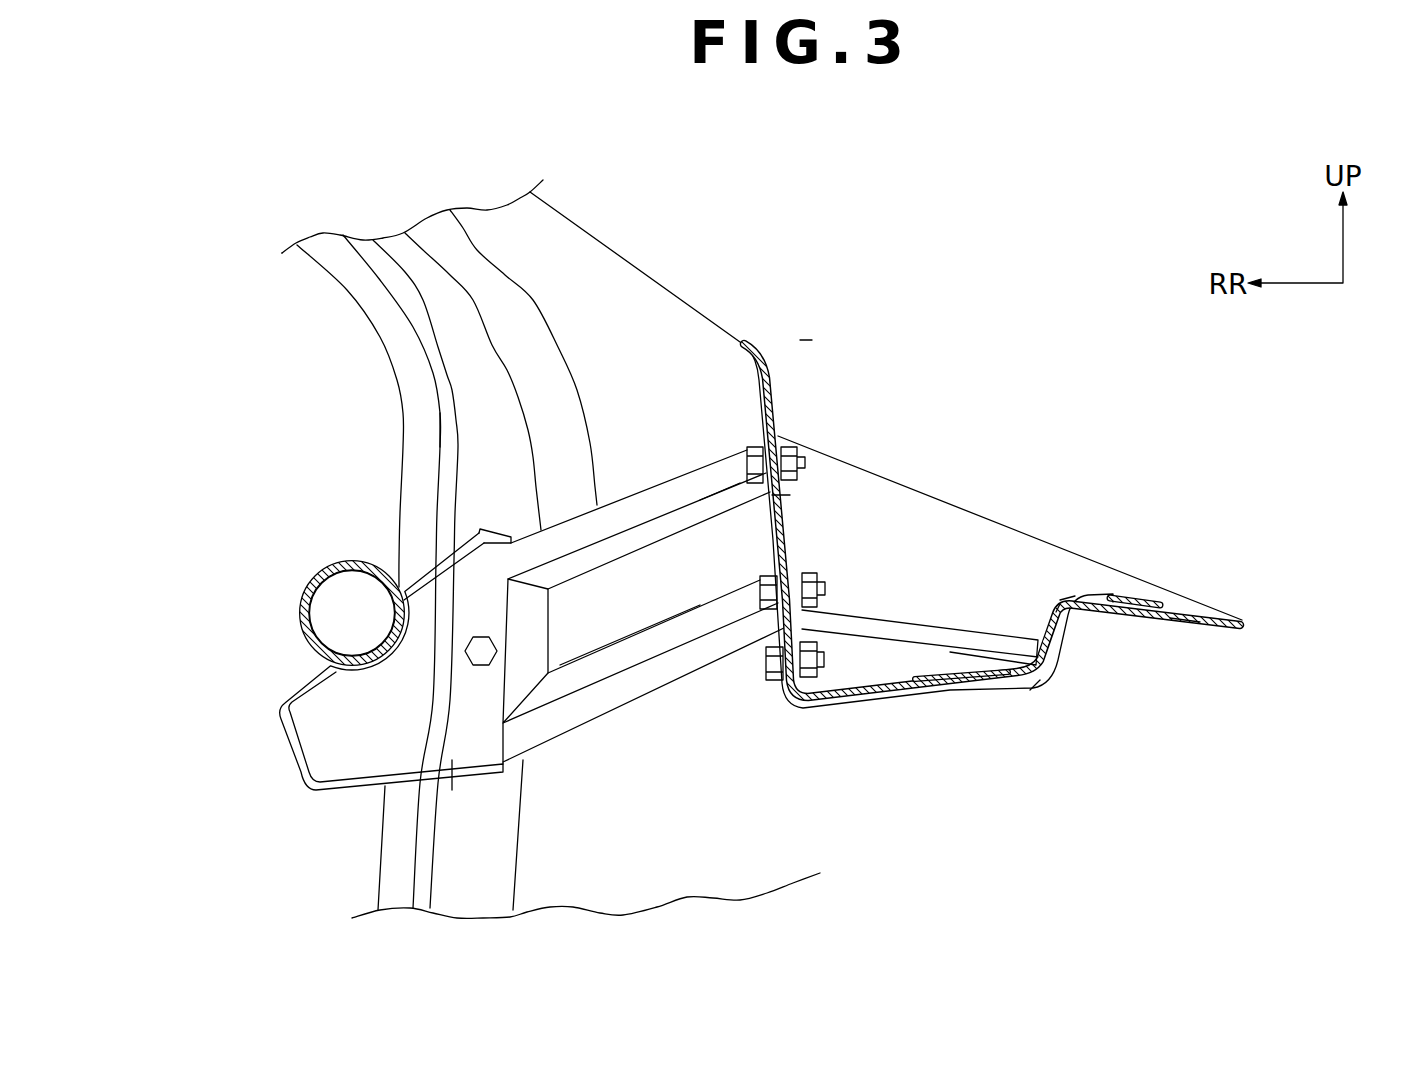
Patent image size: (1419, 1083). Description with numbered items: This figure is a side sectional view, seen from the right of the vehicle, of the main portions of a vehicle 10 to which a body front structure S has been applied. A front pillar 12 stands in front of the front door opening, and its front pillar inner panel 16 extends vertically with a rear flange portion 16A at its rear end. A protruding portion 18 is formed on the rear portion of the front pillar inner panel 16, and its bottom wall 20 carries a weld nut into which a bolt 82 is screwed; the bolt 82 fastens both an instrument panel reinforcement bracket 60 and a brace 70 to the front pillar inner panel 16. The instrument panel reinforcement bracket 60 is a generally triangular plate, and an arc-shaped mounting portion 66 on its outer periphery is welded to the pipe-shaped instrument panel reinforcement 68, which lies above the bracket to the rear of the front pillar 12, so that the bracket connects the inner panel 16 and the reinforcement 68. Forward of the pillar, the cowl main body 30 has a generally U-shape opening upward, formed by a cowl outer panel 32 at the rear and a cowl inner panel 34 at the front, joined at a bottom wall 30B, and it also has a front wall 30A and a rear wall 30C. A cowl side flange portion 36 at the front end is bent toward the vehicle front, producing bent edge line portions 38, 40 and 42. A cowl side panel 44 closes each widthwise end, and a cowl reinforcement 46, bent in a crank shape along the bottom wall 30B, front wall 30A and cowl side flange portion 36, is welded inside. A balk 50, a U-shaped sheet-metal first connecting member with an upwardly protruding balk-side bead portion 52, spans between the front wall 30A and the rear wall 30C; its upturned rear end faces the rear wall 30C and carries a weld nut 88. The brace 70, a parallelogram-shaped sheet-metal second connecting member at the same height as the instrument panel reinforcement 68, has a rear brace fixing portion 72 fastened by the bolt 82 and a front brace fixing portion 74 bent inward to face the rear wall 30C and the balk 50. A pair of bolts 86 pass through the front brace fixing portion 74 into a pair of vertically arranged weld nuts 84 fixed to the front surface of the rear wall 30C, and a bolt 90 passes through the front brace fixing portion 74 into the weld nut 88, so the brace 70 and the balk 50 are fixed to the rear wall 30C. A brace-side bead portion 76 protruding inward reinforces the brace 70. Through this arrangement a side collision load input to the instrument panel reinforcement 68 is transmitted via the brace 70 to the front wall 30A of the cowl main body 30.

The vehicle 10 is at (780, 175).
The front pillar 12 is at (400, 477).
The front pillar inner panel 16 is at (642, 307).
The rear flange portion 16A is at (417, 372).
The protruding portion 18 is at (507, 437).
The bottom wall 20 is at (513, 493).
The cowl main body 30 is at (1003, 555).
The front wall 30A is at (1070, 636).
The bottom wall 30B is at (906, 701).
The rear wall 30C is at (792, 538).
The cowl outer panel 32 is at (790, 508).
The cowl inner panel 34 is at (1060, 648).
The cowl side flange portion 36 is at (1182, 634).
The bent edge line portion 38 is at (1079, 591).
The bent edge line portion 40 is at (1030, 692).
The bent edge line portion 42 is at (816, 705).
The cowl side panel 44 is at (945, 550).
The cowl reinforcement 46 is at (1152, 596).
The balk 50 is at (1063, 590).
The balk-side bead portion 52 is at (943, 628).
The instrument panel reinforcement bracket 60 is at (292, 764).
The mounting portion 66 is at (355, 657).
The instrument panel reinforcement 68 is at (315, 577).
The brace 70 is at (636, 699).
The rear brace fixing portion 72 is at (475, 735).
The front brace fixing portion 74 is at (763, 531).
The brace-side bead portion 76 is at (575, 643).
The bolt 82 is at (483, 645).
The weld nuts 84 is at (789, 437).
The bolts 86 is at (748, 448).
The weld nut 88 is at (822, 573).
The bolt 90 is at (760, 597).
The body front structure S is at (808, 332).